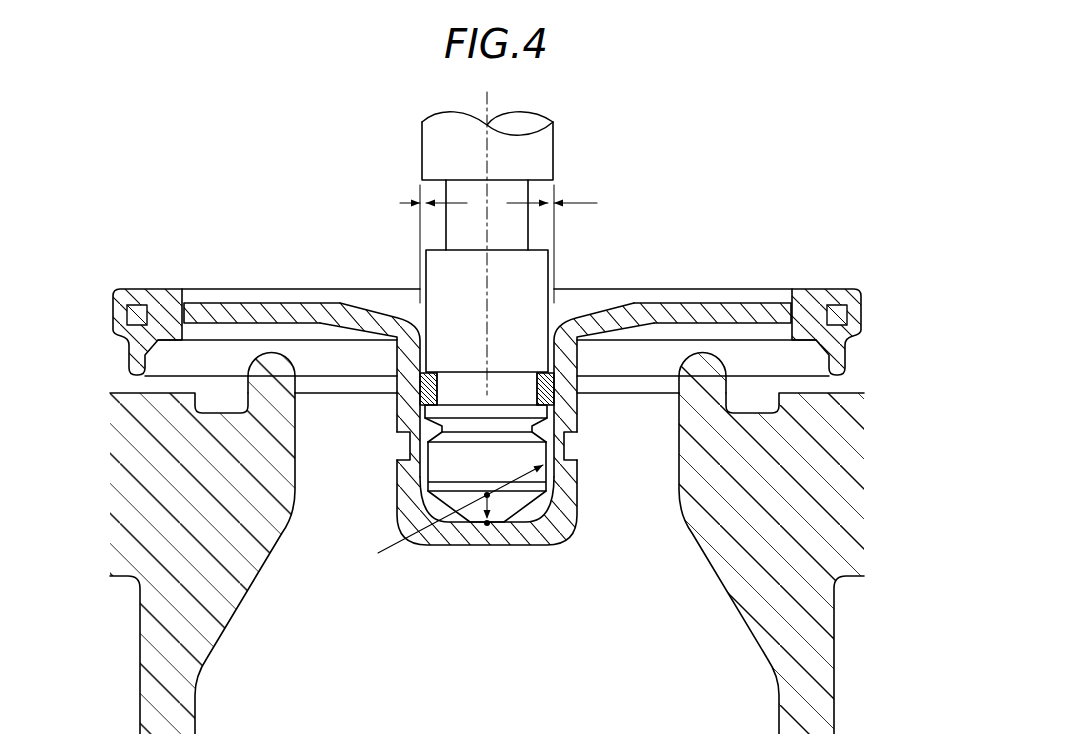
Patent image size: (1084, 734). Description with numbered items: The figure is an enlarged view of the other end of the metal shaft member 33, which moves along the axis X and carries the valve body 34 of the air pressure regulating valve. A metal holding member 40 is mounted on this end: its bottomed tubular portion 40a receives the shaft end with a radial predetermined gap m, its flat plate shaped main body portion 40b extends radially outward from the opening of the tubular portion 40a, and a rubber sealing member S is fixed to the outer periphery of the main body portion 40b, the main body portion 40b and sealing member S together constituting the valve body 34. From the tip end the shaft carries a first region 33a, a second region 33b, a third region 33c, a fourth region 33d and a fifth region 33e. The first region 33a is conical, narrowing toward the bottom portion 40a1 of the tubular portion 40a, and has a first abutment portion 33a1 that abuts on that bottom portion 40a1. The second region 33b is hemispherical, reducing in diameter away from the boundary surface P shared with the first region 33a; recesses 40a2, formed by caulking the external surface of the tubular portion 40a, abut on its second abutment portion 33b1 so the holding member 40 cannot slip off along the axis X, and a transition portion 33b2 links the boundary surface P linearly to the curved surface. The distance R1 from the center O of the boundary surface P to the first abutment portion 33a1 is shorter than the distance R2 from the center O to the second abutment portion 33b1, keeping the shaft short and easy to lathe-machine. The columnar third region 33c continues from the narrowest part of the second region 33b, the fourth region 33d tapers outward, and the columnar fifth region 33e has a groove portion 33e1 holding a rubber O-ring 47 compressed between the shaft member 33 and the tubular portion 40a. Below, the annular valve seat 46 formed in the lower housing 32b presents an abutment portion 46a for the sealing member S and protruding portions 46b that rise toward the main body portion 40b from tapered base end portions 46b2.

The shaft member 33 is at (556, 143).
The fifth region 33e is at (541, 271).
The groove portion 33e1 is at (463, 390).
The O-ring 47 is at (543, 375).
The second region 33b is at (503, 427).
The fourth region 33d is at (549, 412).
The second abutment portion 33b1 is at (546, 440).
The transition portion 33b2 is at (548, 490).
The first region 33a is at (556, 518).
The first abutment portion 33a1 is at (488, 527).
The third region 33c is at (435, 443).
The valve body 34 is at (657, 272).
The holding member 40 is at (487, 406).
The main body portion 40b is at (217, 303).
The tubular portion 40a is at (487, 406).
The bottom portion 40a1 is at (436, 540).
The recess 40a2 is at (405, 460).
The lower housing 32b is at (487, 491).
The valve seat 46 is at (487, 491).
The abutment portion 46a is at (822, 395).
The protruding portion 46b is at (270, 360).
The base end portion 46b2 is at (220, 610).
The sealing member S is at (131, 289).
The radial predetermined gap m is at (490, 192).
The axis X is at (487, 233).
The boundary surface P is at (449, 519).
The center of the boundary surface O is at (486, 492).
The distance from center O to first abutment portion R1 is at (482, 524).
The distance from center O to second abutment portion R2 is at (527, 472).